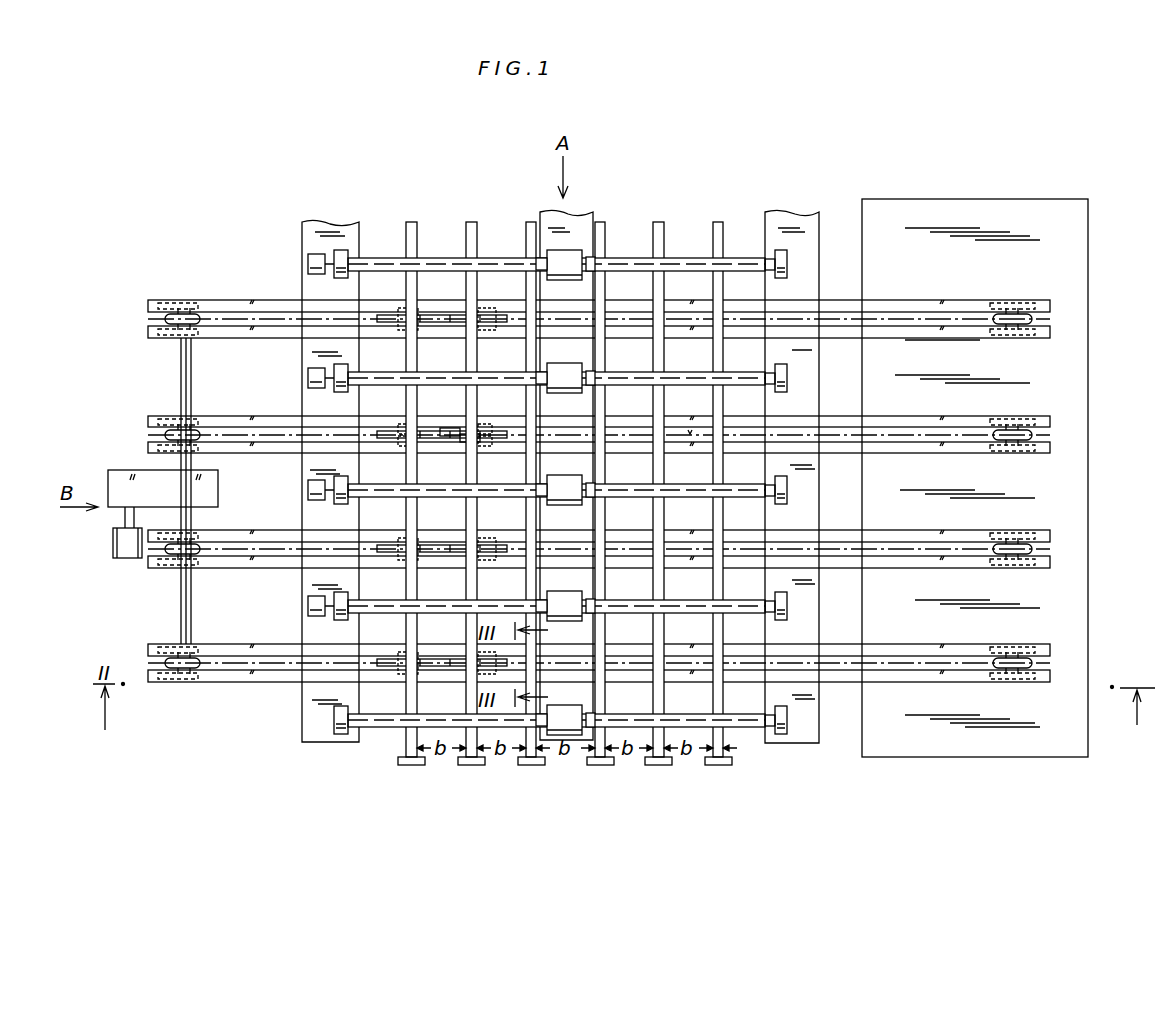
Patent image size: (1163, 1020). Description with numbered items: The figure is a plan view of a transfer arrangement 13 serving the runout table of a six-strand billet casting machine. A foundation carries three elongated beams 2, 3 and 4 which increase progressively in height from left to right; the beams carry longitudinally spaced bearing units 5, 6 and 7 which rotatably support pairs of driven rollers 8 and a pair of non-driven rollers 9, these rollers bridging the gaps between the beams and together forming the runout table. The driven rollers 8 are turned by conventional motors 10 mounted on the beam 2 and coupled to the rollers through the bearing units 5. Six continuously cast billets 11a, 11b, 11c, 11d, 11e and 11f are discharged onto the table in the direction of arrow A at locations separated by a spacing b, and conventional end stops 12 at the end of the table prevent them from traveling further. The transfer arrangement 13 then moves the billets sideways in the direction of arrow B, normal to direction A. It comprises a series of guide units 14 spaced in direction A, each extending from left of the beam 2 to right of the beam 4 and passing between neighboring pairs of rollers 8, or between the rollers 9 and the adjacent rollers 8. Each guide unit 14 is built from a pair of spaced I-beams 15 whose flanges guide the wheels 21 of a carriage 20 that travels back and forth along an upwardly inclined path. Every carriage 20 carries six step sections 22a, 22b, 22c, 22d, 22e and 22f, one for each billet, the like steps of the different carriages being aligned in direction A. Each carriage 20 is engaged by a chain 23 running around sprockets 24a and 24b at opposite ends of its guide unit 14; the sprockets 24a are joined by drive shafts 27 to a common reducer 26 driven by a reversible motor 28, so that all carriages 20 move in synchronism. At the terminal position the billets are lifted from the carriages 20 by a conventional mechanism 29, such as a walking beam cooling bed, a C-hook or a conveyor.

The elongated beam 2 is at (338, 222).
The elongated beam 3 is at (580, 212).
The elongated beam 4 is at (803, 222).
The bearing unit 5 is at (350, 250).
The bearing unit 6 is at (564, 240).
The bearing unit 7 is at (788, 266).
The driven roller 8 is at (447, 262).
The non-driven roller 9 is at (443, 720).
The motor 10 is at (308, 266).
The billet 11a is at (413, 222).
The billet 11b is at (472, 222).
The billet 11c is at (530, 222).
The billet 11d is at (600, 222).
The billet 11e is at (658, 222).
The billet 11f is at (718, 222).
The end stop 12 is at (460, 786).
The transfer arrangement 13 is at (247, 735).
The guide unit 14 is at (254, 288).
The I-beam 15 is at (150, 333).
The carriage 20 is at (457, 303).
The wheel 21 is at (490, 313).
The step section 22a is at (418, 428).
The step section 22b is at (418, 442).
The step section 22c is at (452, 430).
The step section 22d is at (462, 442).
The step section 22e is at (490, 430).
The step section 22f is at (490, 442).
The chain 23 is at (692, 428).
The sprocket 24a is at (165, 437).
The sprocket 24b is at (1032, 437).
The reducer 26 is at (218, 482).
The drive shaft 27 is at (192, 372).
The reversible motor 28 is at (130, 560).
The lifting mechanism 29 is at (1090, 522).